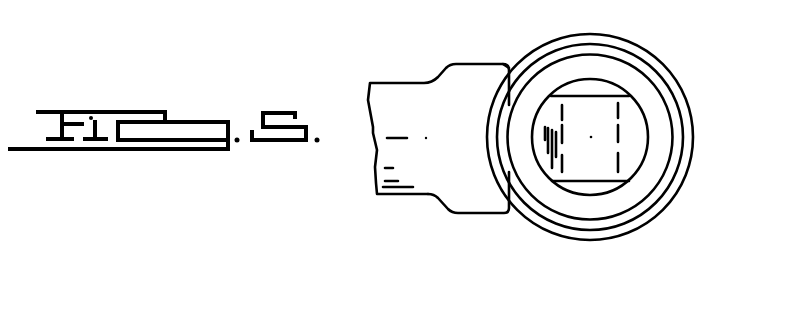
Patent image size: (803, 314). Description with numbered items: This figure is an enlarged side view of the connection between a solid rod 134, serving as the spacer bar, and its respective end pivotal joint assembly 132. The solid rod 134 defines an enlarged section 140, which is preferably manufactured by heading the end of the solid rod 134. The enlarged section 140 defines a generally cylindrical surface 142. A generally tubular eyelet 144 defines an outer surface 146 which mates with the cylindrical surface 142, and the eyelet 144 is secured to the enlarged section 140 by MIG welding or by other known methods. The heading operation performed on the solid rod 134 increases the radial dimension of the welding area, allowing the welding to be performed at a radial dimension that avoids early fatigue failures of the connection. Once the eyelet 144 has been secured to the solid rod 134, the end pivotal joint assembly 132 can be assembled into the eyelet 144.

The end pivotal joint assembly 132 is at (699, 70).
The solid rod 134 is at (393, 195).
The enlarged section 140 is at (475, 213).
The cylindrical surface 142 is at (509, 84).
The eyelet 144 is at (650, 212).
The outer surface 146 is at (584, 240).